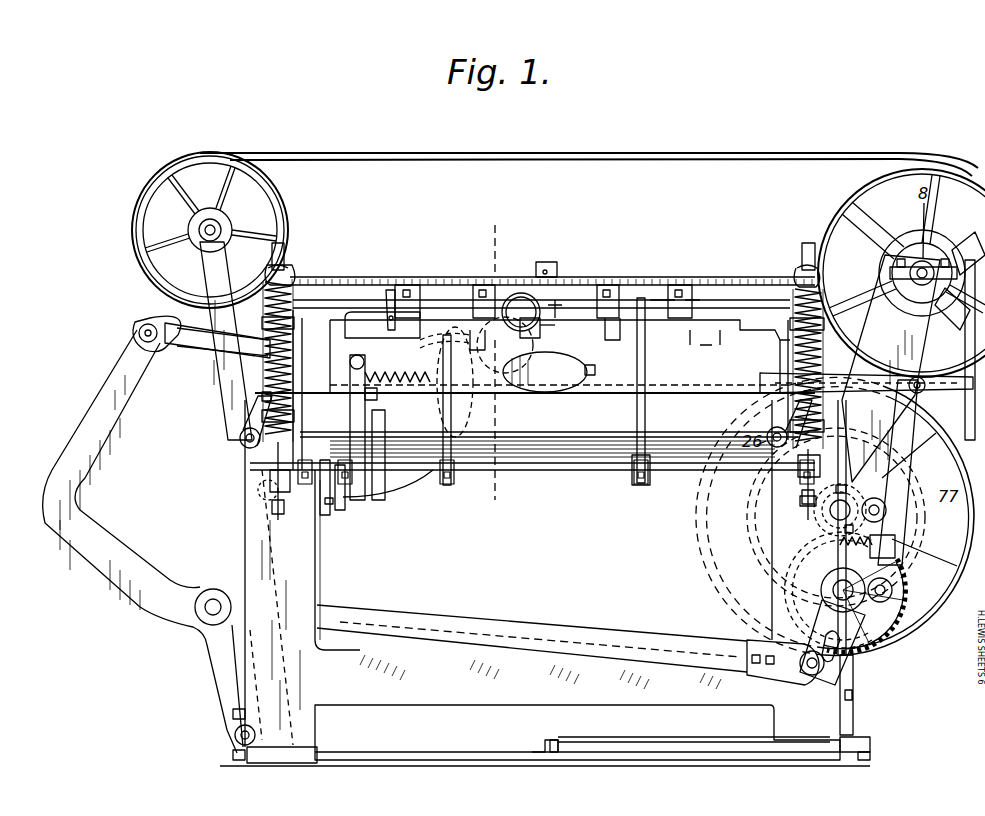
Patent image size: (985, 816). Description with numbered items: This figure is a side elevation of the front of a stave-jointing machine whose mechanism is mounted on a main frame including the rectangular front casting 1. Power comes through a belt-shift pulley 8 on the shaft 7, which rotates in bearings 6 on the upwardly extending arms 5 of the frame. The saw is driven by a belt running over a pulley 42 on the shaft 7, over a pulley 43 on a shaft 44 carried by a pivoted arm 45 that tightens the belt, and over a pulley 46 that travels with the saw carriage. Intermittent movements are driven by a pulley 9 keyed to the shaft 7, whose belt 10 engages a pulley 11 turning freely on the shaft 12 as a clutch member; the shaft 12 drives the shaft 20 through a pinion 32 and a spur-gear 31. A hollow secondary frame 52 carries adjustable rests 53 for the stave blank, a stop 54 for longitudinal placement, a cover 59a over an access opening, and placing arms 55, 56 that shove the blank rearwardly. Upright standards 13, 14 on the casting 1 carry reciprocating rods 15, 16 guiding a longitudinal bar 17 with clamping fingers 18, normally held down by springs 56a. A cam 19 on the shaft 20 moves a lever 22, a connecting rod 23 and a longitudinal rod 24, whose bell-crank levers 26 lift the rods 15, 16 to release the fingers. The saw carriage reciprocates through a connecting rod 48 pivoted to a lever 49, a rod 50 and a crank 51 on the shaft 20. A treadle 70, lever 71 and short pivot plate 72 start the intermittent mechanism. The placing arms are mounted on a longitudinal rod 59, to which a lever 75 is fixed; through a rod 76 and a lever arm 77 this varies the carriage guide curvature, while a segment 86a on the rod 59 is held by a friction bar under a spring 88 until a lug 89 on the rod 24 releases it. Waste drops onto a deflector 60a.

The rectangular front casting 1 is at (577, 707).
The upwardly extending arms 5 is at (891, 368).
The bearings 6 is at (958, 268).
The shaft 7 is at (928, 262).
The belt-shift pulley 8 is at (491, 367).
The pulley 9 is at (903, 240).
The belt 10 is at (968, 400).
The pulley 11 is at (870, 758).
The shaft 12 is at (830, 514).
The upright standard 13 is at (266, 362).
The upright standard 14 is at (790, 355).
The reciprocating rod 15 is at (284, 255).
The reciprocating rod 16 is at (800, 247).
The longitudinal bar 17 is at (598, 270).
The clamping fingers 18 is at (690, 302).
The cam 19 is at (898, 550).
The shaft 20 is at (833, 588).
The lever 22 is at (905, 471).
The connecting rod 23 is at (905, 377).
The longitudinal rod 24 is at (585, 395).
The bell-crank levers 26 is at (243, 413).
The spur-gear 31 is at (885, 633).
The pinion 32 is at (800, 501).
The pulley 42 is at (838, 200).
The pulley 43 is at (138, 216).
The shaft 44 is at (218, 228).
The pivoted arm 45 is at (212, 280).
The pulley 46 is at (515, 290).
The connecting rod 48 is at (205, 343).
The lever 49 is at (92, 440).
The rod 50 is at (482, 612).
The crank 51 is at (832, 641).
The hollow secondary frame 52 is at (559, 380).
The arms or rests 53 is at (610, 325).
The stop or rest 54 is at (390, 300).
The placing arm 55 is at (448, 400).
The placing arm 56 is at (637, 405).
The springs 56a is at (292, 280).
The longitudinal rod 59 is at (543, 478).
The cover 59a is at (549, 372).
The deflector 60a is at (543, 525).
The treadle 70 is at (543, 752).
The lever 71 is at (645, 745).
The short pivot plate 72 is at (870, 718).
The lever 75 is at (343, 512).
The rod 76 is at (328, 518).
The lever arm 77 is at (408, 495).
The segment 86a is at (380, 432).
The spring 88 is at (357, 380).
The lug 89 is at (365, 395).